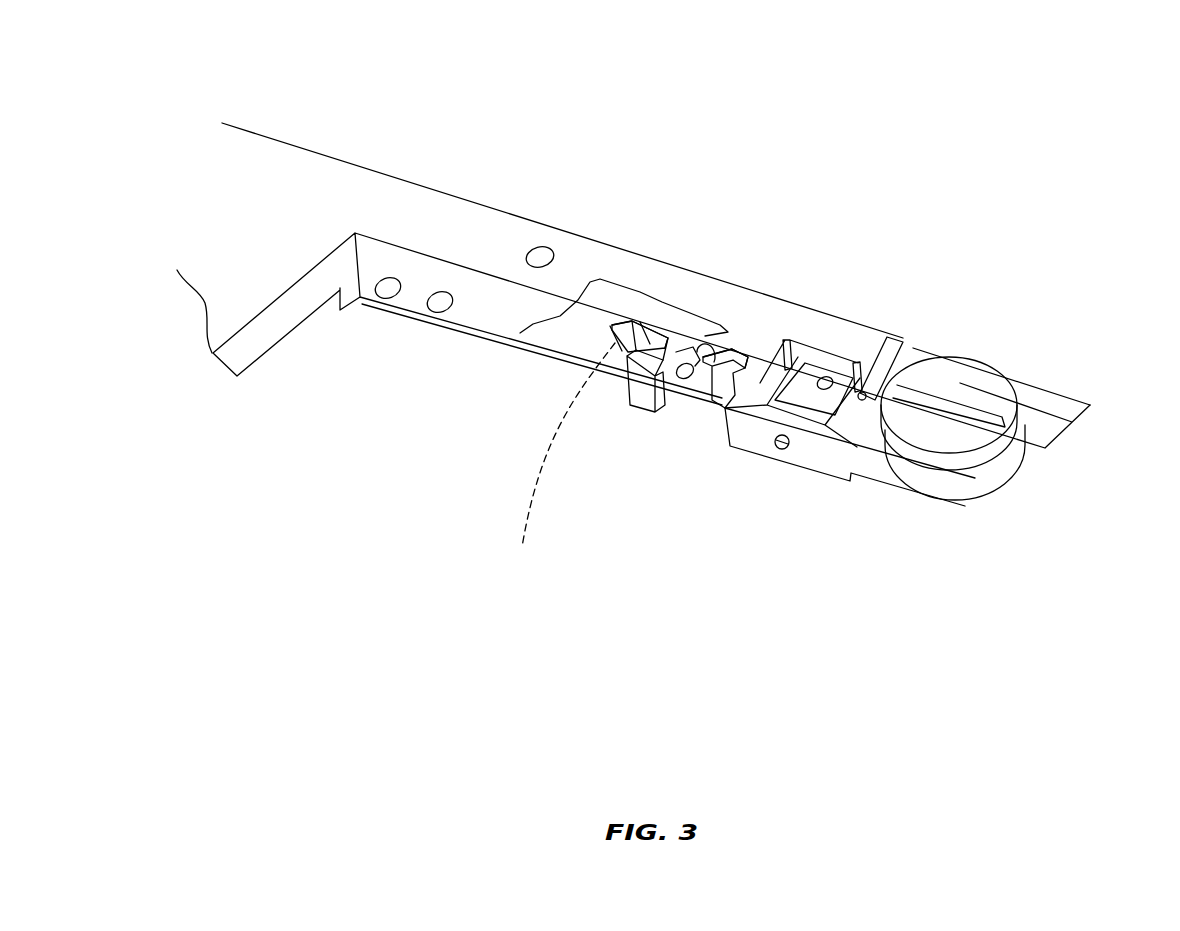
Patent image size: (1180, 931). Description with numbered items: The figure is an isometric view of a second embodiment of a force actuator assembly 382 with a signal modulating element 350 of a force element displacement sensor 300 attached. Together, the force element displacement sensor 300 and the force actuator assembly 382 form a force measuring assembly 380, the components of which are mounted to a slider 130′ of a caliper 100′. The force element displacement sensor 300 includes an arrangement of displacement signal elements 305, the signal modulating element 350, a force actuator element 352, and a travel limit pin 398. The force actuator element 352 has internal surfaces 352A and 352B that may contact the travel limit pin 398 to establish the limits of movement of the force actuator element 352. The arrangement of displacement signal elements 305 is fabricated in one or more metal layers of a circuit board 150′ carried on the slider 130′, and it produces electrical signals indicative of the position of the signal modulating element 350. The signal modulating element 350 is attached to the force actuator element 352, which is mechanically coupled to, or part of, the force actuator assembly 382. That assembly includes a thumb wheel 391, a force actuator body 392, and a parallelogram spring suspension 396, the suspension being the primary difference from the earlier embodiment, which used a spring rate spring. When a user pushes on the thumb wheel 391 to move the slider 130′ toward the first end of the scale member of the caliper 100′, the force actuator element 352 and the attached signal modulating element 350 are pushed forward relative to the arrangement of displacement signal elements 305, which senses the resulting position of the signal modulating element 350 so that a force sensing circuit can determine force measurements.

The caliper 100′ is at (1045, 110).
The slider 130′ is at (322, 167).
The circuit board 150′ is at (570, 328).
The force element displacement sensor 300 is at (650, 570).
The arrangement of displacement signal elements 305 is at (563, 462).
The signal modulating element 350 is at (633, 357).
The force actuator element 352 is at (690, 400).
The internal surface 352A is at (653, 370).
The internal surface 352B is at (708, 377).
The travel limit pin 398 is at (683, 377).
The force measuring assembly 380 is at (1028, 627).
The force actuator assembly 382 is at (1025, 577).
The parallelogram spring suspension 396 is at (830, 417).
The force actuator body 392 is at (933, 490).
The thumb wheel 391 is at (985, 502).